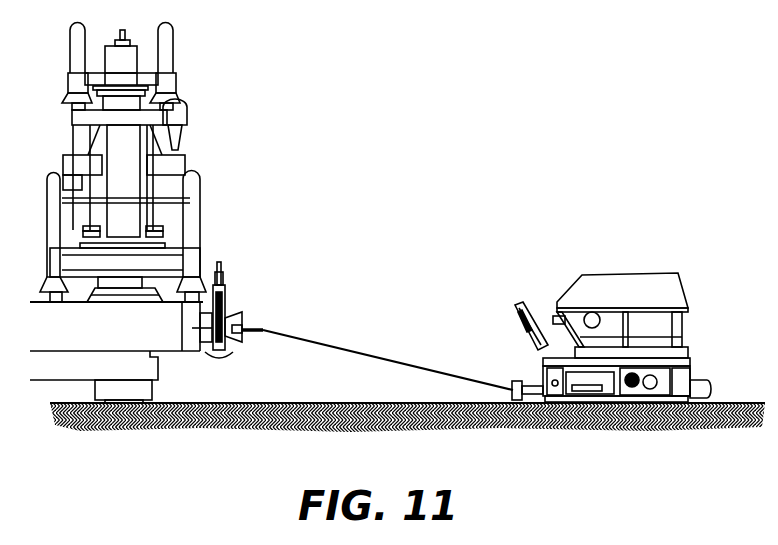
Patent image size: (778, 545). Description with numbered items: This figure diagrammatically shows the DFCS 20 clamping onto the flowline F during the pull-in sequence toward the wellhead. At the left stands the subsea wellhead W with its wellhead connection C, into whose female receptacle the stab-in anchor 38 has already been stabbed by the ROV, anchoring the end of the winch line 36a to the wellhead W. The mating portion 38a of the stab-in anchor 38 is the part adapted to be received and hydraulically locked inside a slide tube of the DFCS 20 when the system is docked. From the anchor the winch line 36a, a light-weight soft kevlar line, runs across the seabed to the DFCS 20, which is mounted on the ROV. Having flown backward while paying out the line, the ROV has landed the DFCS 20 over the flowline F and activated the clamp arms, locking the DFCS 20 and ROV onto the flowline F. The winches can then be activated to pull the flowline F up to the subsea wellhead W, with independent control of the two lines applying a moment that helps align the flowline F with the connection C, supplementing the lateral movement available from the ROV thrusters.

The subsea wellhead W is at (176, 160).
The wellhead connection C is at (222, 290).
The stab-in anchor 38 is at (250, 326).
The mating portion 38a is at (263, 335).
The winch line 36a is at (352, 348).
The DFCS 20 is at (543, 378).
The element ROV is at (632, 272).
The flowline F is at (700, 385).